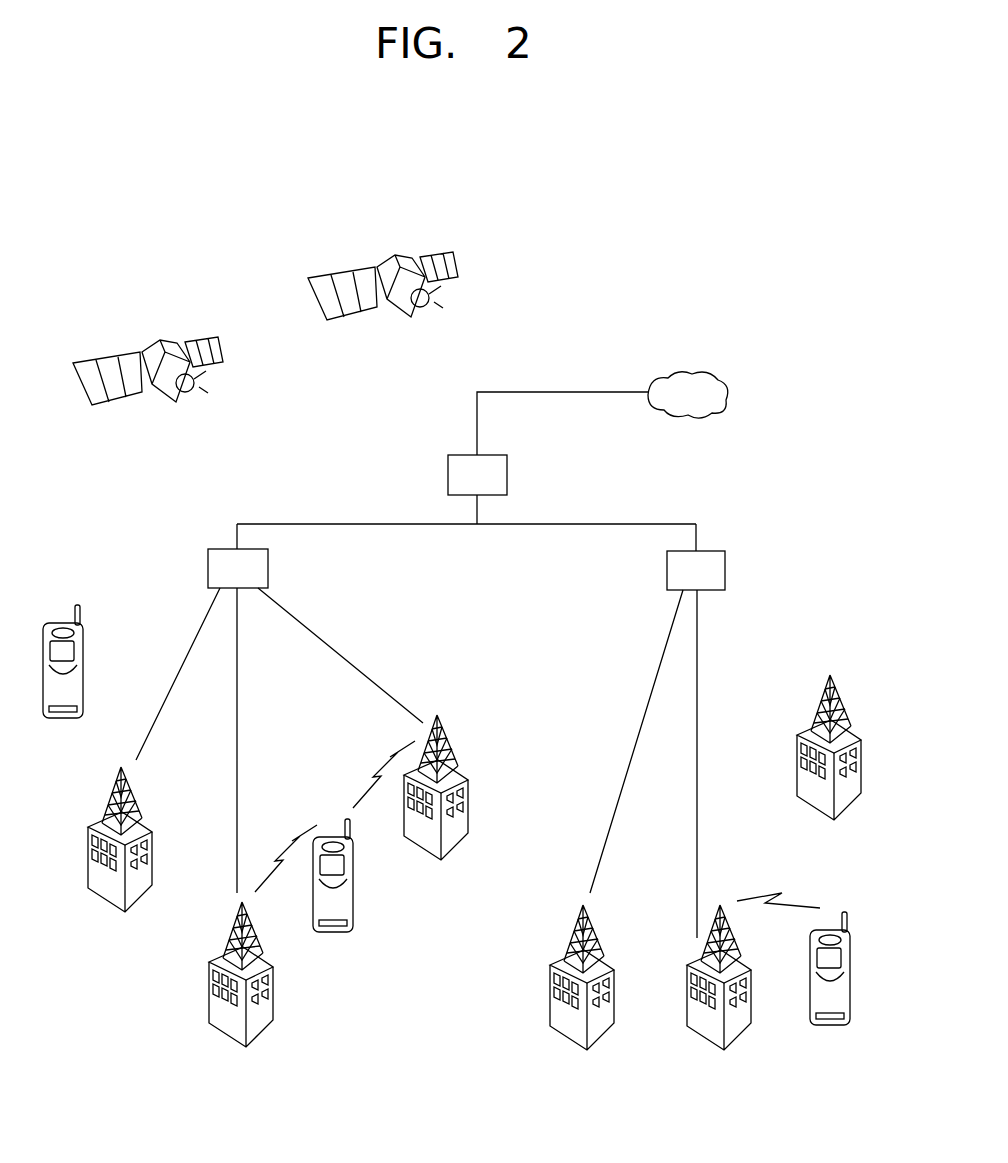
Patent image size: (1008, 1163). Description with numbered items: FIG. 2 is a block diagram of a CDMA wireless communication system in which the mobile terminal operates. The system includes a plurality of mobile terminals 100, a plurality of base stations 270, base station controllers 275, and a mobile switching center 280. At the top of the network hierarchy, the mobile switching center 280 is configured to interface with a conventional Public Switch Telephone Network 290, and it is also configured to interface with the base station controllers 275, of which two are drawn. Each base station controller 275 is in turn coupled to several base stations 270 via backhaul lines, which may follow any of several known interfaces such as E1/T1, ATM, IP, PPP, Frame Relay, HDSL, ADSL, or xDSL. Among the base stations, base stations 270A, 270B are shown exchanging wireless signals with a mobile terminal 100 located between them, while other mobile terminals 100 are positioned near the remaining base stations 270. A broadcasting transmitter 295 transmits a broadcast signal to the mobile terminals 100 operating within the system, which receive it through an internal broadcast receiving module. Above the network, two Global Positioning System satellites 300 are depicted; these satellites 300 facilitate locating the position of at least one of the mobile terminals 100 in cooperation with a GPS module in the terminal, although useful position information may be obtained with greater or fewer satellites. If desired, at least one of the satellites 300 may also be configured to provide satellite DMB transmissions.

The mobile terminal 100 is at (855, 1075).
The base station 270 is at (785, 1077).
The base station 270A is at (262, 1033).
The base station 270B is at (455, 848).
The base station controller 275 is at (765, 571).
The mobile switching center 280 is at (507, 475).
The Public Switch Telephone Network 290 is at (728, 393).
The broadcasting transmitter 295 is at (797, 766).
The GPS satellite 300 is at (391, 253).